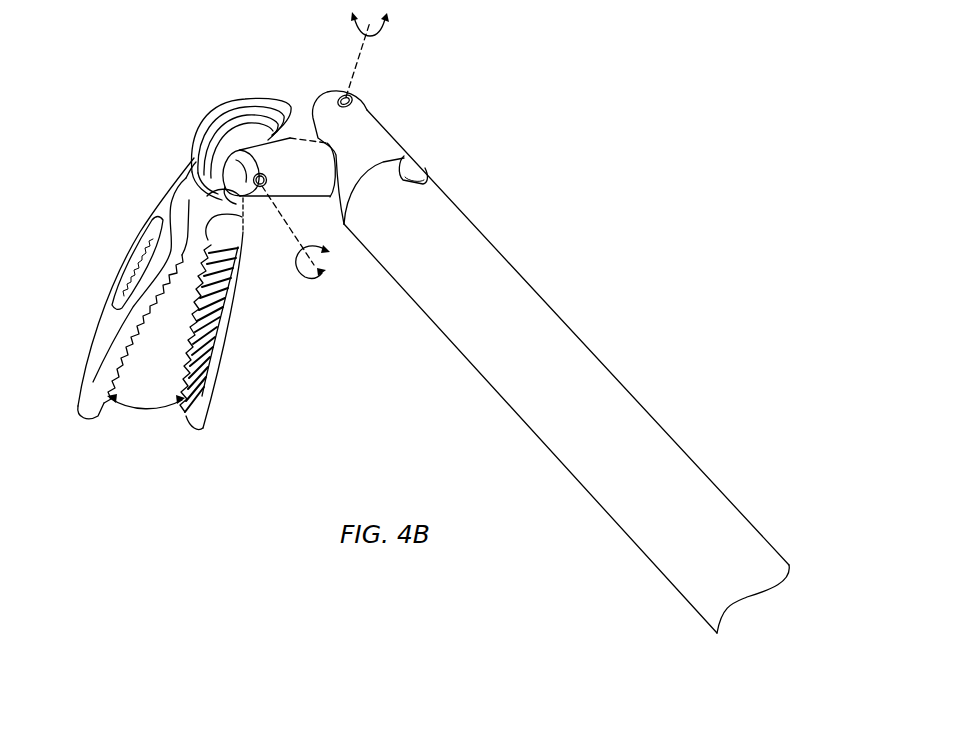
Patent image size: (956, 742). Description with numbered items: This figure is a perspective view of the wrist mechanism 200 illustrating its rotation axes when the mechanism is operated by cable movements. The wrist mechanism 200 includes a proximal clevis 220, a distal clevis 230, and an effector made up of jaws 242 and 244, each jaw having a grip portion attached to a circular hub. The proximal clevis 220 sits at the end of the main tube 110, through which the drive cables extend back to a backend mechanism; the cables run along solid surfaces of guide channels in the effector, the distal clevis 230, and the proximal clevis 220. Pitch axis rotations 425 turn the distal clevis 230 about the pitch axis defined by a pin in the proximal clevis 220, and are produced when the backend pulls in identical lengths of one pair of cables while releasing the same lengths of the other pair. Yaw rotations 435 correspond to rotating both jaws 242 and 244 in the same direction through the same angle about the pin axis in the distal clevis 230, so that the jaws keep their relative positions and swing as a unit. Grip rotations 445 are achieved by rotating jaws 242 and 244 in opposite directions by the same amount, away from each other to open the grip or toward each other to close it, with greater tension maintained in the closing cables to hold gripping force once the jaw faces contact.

The wrist mechanism 200 is at (157, 79).
The main tube 110 is at (553, 310).
The proximal clevis 220 is at (388, 138).
The distal clevis 230 is at (288, 103).
The jaw 242 is at (228, 322).
The jaw 244 is at (97, 349).
The pitch axis rotations 425 is at (387, 20).
The yaw rotations 435 is at (309, 280).
The grip rotations 445 is at (143, 410).